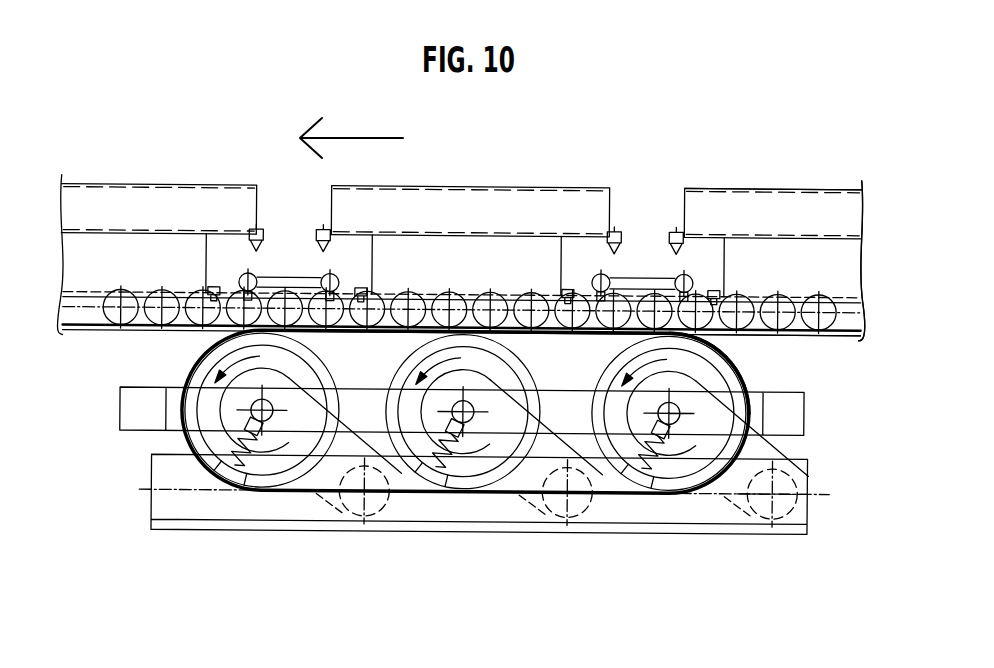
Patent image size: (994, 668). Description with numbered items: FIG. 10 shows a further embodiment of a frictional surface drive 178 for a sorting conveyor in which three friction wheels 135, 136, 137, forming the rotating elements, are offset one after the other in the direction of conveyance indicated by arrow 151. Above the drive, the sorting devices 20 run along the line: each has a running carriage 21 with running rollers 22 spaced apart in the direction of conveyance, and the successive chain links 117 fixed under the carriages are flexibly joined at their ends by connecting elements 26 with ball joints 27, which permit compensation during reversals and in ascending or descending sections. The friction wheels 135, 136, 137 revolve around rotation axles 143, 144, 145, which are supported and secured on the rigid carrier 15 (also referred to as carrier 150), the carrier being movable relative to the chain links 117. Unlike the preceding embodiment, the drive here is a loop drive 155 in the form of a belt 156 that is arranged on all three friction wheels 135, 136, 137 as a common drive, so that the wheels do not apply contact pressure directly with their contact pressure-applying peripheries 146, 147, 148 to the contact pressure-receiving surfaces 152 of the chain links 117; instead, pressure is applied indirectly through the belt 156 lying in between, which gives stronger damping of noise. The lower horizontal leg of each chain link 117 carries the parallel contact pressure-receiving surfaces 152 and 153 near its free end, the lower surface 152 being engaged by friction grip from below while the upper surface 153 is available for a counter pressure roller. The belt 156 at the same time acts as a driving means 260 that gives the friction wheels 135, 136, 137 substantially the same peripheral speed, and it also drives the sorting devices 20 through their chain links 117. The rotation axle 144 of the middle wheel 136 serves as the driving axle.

The rigid carrier 15 is at (449, 492).
The sorting device 20 is at (80, 203).
The running carriage 21 is at (100, 255).
The running roller 22 is at (127, 313).
The connecting element 26 is at (633, 285).
The ball joint 27 is at (598, 275).
The chain link 117 is at (88, 313).
The friction wheel 135 is at (190, 437).
The friction wheel 136 is at (408, 470).
The friction wheel 137 is at (713, 480).
The rotation axle 143 is at (240, 420).
The rotation axle 144 is at (476, 421).
The rotation axle 145 is at (678, 423).
The contact pressure-applying periphery 146 is at (330, 357).
The contact pressure-applying periphery 147 is at (432, 462).
The contact pressure-applying periphery 148 is at (628, 462).
The rigid carrier 150 is at (130, 408).
The arrow indicating direction of conveyance 151 is at (370, 135).
The contact pressure-receiving surface 152 is at (805, 340).
The contact pressure-receiving surface 153 is at (850, 333).
The loop drive 155 is at (292, 497).
The belt 156 is at (520, 494).
The frictional surface drive 178 is at (735, 347).
The driving means 260 is at (523, 338).